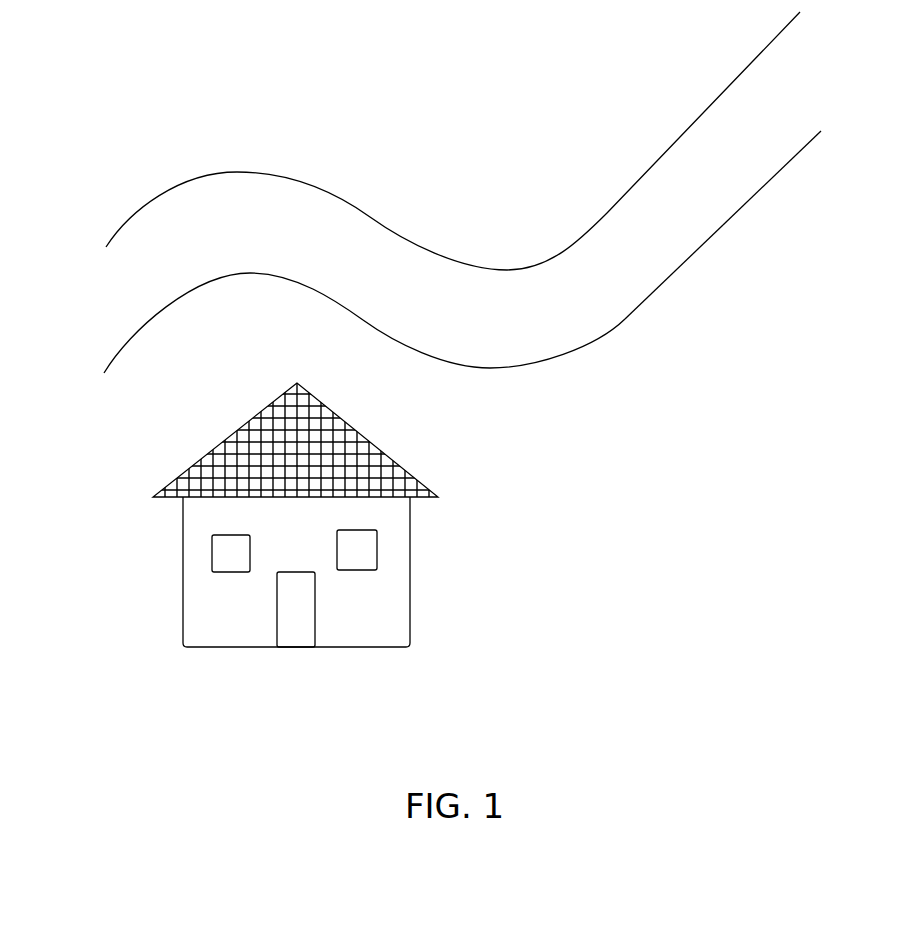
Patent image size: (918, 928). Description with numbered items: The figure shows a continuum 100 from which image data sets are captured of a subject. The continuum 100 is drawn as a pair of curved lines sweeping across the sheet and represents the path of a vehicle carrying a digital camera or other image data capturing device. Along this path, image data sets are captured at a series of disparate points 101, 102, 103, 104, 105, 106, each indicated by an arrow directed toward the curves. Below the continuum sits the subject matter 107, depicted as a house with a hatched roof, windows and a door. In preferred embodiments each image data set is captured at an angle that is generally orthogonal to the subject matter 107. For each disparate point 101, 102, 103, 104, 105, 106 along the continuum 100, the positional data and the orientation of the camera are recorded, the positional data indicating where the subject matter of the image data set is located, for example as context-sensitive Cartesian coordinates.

The continuum 100 is at (518, 270).
The disparate point 101 is at (133, 343).
The disparate point 102 is at (238, 289).
The disparate point 103 is at (358, 340).
The disparate point 104 is at (500, 383).
The disparate point 105 is at (695, 283).
The disparate point 106 is at (828, 172).
The subject matter 107 is at (309, 515).